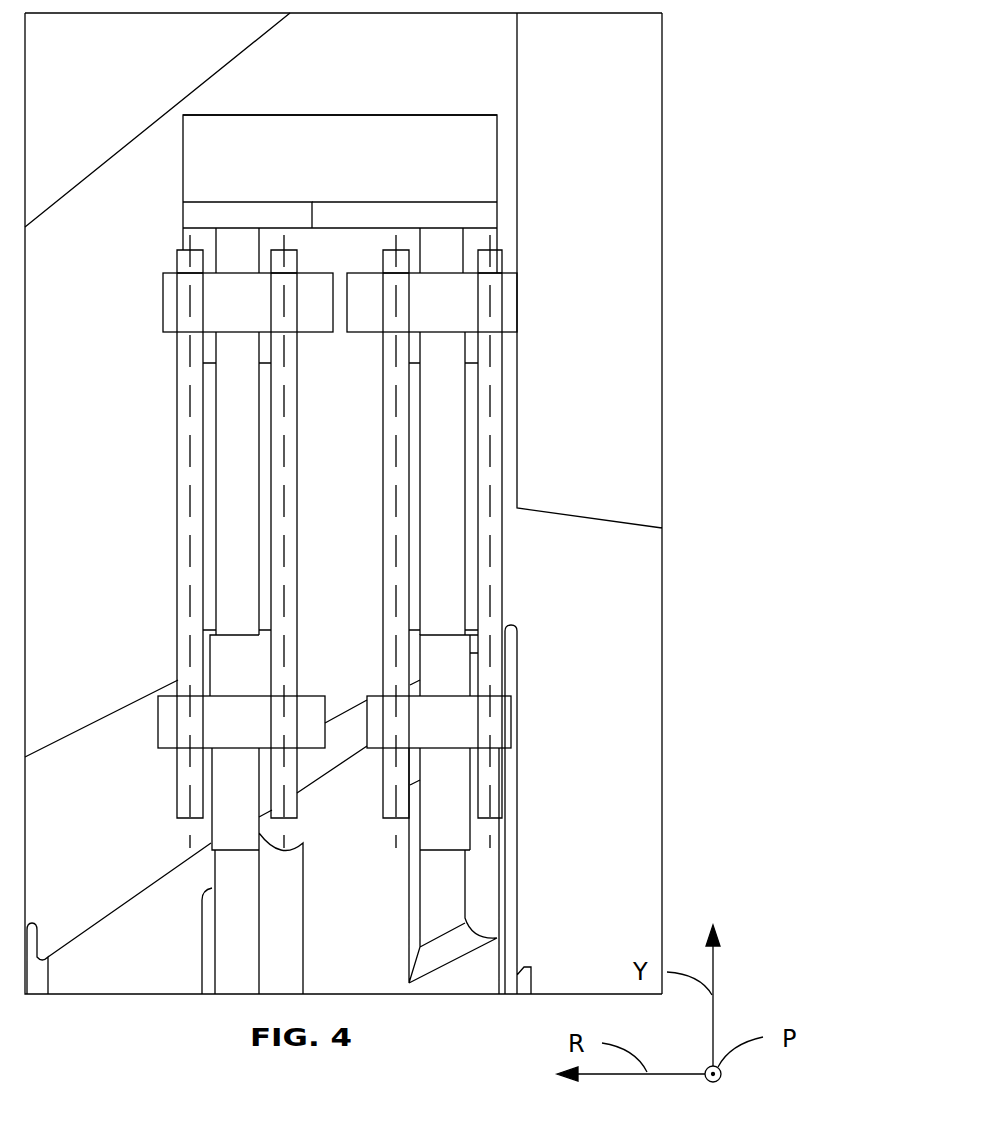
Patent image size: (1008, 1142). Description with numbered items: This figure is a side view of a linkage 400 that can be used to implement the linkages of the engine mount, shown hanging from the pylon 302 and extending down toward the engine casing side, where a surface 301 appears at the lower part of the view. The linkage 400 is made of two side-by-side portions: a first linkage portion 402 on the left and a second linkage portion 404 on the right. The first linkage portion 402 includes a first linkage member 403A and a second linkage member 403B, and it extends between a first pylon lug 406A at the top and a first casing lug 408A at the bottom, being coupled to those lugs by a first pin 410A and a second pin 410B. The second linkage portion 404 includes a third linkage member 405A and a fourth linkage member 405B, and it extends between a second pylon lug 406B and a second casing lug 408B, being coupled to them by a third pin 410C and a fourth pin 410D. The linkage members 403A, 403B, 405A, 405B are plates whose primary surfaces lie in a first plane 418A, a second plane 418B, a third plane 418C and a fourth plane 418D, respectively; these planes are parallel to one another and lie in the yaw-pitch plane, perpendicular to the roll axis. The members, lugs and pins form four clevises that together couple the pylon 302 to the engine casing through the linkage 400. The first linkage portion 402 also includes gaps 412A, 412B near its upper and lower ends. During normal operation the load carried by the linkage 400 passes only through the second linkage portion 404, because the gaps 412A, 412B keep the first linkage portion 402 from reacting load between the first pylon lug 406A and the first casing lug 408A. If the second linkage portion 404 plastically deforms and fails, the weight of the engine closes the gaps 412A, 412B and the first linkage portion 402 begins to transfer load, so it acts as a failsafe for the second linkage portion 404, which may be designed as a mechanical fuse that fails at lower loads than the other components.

The floor surface 301 is at (140, 891).
The pylon 302 is at (662, 152).
The linkage 400 is at (524, 106).
The first linkage portion 402 is at (196, 210).
The second linkage portion 404 is at (475, 210).
The first pylon lug 406A is at (223, 228).
The second pylon lug 406B is at (446, 222).
The first linkage member 403A is at (178, 410).
The second linkage member 403B is at (272, 470).
The third linkage member 405A is at (503, 430).
The fourth linkage member 405B is at (408, 488).
The first pin 410A is at (170, 307).
The second pin 410B is at (158, 720).
The third pin 410C is at (510, 313).
The fourth pin 410D is at (512, 726).
The gap 412A is at (207, 186).
The gap 412B is at (156, 668).
The first plane 418A is at (192, 507).
The second plane 418B is at (285, 567).
The third plane 418C is at (398, 597).
The fourth plane 418D is at (490, 560).
The first casing lug 408A is at (203, 958).
The second casing lug 408B is at (463, 890).